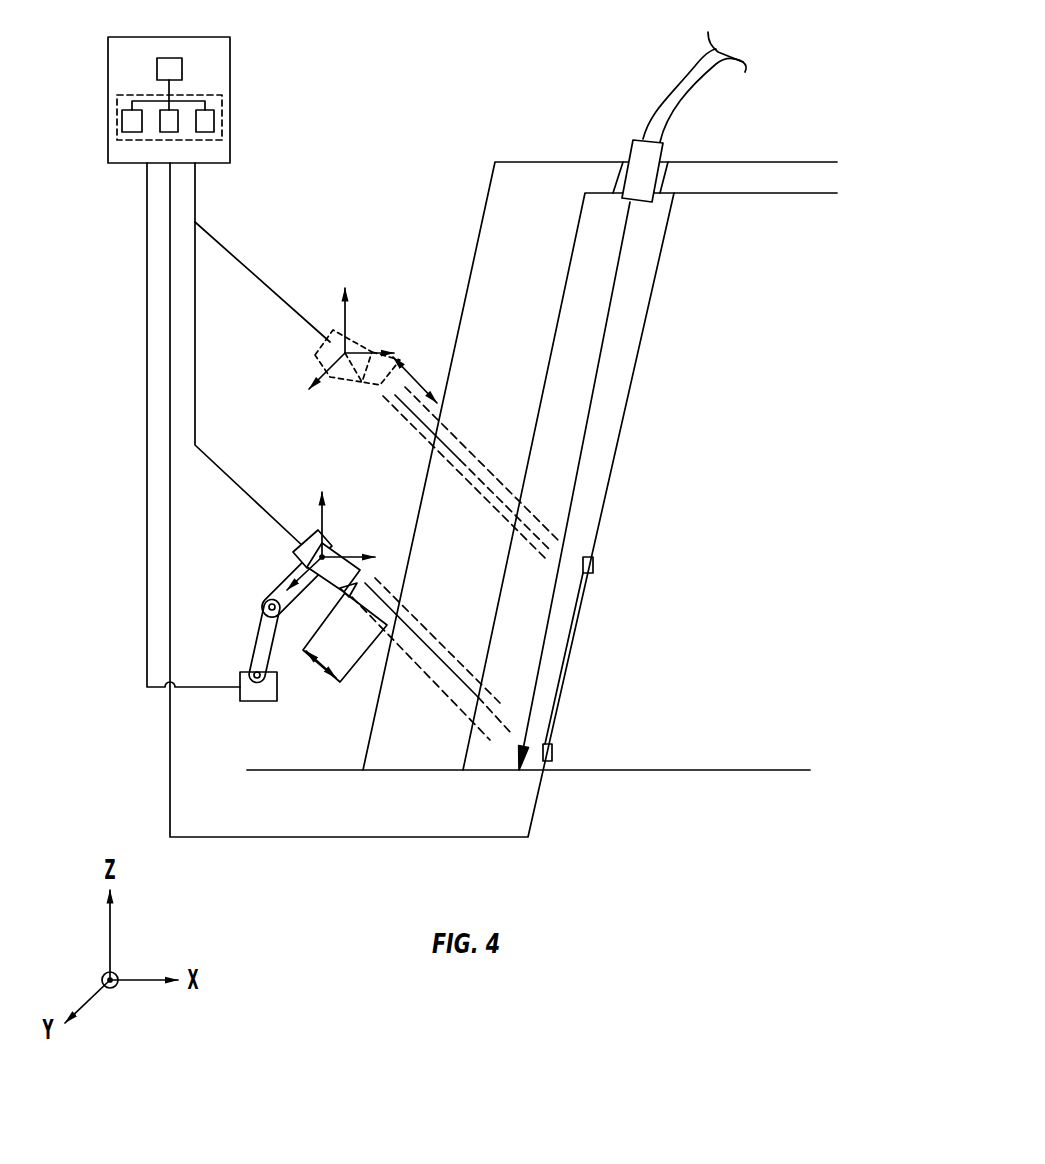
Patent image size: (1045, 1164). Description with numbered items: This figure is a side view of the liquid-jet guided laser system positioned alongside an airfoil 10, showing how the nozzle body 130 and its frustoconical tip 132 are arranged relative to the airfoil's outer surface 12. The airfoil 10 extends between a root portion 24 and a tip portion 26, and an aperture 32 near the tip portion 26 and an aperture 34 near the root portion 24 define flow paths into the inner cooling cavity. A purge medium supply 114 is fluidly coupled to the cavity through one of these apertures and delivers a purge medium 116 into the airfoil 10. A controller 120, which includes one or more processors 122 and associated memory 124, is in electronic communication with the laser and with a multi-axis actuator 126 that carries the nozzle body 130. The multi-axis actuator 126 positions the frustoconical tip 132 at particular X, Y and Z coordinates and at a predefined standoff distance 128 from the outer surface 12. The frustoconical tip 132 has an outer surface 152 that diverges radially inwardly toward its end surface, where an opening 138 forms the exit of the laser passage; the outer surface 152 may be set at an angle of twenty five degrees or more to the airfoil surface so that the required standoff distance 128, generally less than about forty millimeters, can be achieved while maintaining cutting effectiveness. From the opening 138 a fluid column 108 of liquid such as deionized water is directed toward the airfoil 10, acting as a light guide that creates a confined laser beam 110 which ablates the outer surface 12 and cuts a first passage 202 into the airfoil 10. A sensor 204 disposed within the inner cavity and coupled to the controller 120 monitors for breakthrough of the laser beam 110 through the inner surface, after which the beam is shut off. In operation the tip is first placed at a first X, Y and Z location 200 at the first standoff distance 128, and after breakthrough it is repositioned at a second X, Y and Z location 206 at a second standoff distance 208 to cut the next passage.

The airfoil 10 is at (800, 130).
The outer surface 12 is at (372, 714).
The root portion 24 is at (324, 777).
The tip portion 26 is at (492, 156).
The aperture 32 is at (620, 160).
The aperture 34 is at (488, 766).
The fluid column 108 is at (345, 637).
The confined laser beam 110 is at (395, 583).
The purge medium supply 114 is at (650, 157).
The purge medium 116 is at (600, 366).
The controller 120 is at (197, 37).
The processor 122 is at (182, 70).
The memory 124 is at (128, 95).
The multi-axis actuator 126 is at (328, 501).
The standoff distance 128 is at (316, 670).
The nozzle body 130 is at (265, 600).
The frustoconical tip 132 is at (377, 545).
The opening 138 is at (380, 560).
The outer surface 152 is at (320, 585).
The first X, Y and Z location 200 is at (318, 538).
The first passage 202 is at (425, 631).
The sensor 204 is at (597, 565).
The second X, Y and Z location 206 is at (330, 345).
The second standoff distance 208 is at (417, 383).